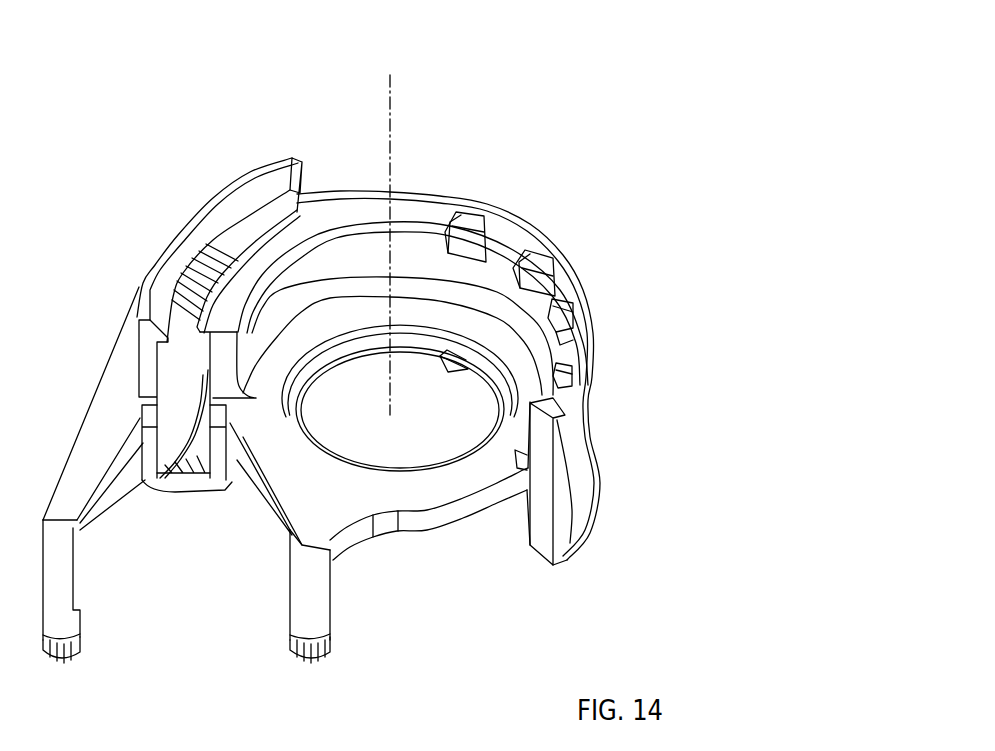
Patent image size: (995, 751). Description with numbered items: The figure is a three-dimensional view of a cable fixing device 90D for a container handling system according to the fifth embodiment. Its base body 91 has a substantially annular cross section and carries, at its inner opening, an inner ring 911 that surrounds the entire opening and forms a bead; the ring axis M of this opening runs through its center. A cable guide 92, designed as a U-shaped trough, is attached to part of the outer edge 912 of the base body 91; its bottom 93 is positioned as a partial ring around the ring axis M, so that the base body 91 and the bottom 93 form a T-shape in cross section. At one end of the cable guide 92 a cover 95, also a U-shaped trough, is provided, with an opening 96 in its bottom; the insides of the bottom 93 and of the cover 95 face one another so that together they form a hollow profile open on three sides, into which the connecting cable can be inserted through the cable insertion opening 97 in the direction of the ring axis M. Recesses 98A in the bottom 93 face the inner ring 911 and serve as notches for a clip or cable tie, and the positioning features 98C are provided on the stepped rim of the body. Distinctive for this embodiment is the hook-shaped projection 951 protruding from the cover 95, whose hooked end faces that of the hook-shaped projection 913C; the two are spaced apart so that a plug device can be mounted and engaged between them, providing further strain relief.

The cable fixing device 90D is at (138, 146).
The ring axis M is at (394, 106).
The cover 95 is at (207, 195).
The cable insertion opening 97 is at (188, 295).
The opening 96 is at (163, 363).
The positioning tab 98C is at (477, 214).
The recess 98A is at (465, 374).
The inner ring 911 is at (300, 428).
The outer edge 912 is at (380, 522).
The base body 91 is at (430, 493).
The cable guide 92 is at (543, 500).
The bottom 93 is at (570, 518).
The hook-shaped projection 951 is at (58, 628).
The hook-shaped projection 913C is at (310, 628).